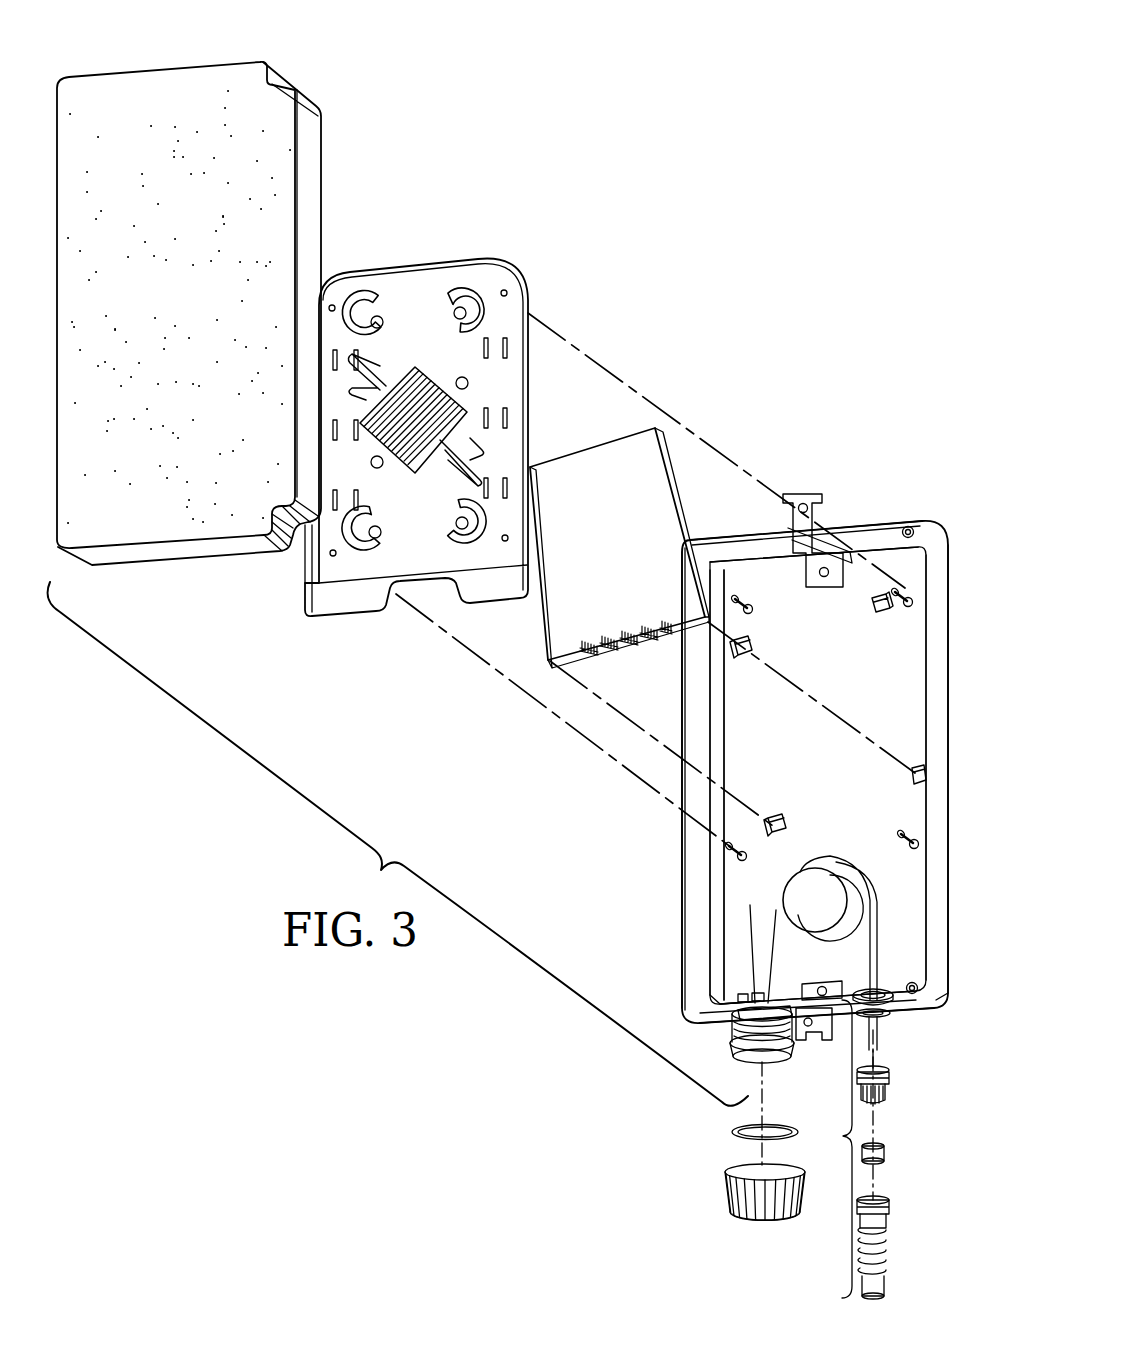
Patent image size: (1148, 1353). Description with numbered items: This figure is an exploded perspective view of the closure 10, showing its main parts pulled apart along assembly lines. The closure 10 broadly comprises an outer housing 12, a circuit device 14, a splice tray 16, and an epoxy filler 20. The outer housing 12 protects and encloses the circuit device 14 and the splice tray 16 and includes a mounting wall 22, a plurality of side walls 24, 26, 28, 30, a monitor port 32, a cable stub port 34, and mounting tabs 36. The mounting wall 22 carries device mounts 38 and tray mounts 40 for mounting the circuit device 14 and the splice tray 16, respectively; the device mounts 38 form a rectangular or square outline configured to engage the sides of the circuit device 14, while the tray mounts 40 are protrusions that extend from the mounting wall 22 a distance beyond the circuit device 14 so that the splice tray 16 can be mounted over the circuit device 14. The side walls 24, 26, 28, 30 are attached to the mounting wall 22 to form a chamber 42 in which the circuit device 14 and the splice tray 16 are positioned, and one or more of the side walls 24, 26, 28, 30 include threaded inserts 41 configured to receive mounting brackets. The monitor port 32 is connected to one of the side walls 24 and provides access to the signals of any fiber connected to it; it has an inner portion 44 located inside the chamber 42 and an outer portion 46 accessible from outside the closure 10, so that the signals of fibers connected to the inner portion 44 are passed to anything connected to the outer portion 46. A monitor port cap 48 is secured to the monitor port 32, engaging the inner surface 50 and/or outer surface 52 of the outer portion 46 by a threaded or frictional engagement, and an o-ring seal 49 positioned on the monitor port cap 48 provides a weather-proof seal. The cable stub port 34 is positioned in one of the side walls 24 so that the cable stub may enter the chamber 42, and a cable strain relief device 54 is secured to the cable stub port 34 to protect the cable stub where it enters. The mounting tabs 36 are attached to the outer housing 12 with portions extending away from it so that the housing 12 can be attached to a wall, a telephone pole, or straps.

The closure 10 is at (707, 170).
The outer housing 12 is at (785, 863).
The circuit device 14 is at (582, 470).
The splice tray 16 is at (410, 285).
The epoxy filler 20 is at (153, 97).
The mounting wall 22 is at (745, 727).
The side wall 24 is at (916, 1010).
The side wall 26 is at (933, 688).
The side wall 28 is at (860, 520).
The side wall 30 is at (685, 870).
The monitor port 32 is at (750, 985).
The cable stub port 34 is at (878, 1025).
The mounting tabs 36 is at (800, 496).
The device mounts 38 is at (876, 602).
The tray mounts 40 is at (741, 601).
The threaded inserts 41 is at (906, 525).
The chamber 42 is at (782, 718).
The inner portion 44 is at (770, 1003).
The outer portion 46 is at (722, 1028).
The monitor port cap 48 is at (742, 1180).
The o-ring seal 49 is at (733, 1132).
The inner surface 50 is at (778, 1056).
The outer surface 52 is at (760, 1048).
The cable strain relief device 54 is at (850, 1149).